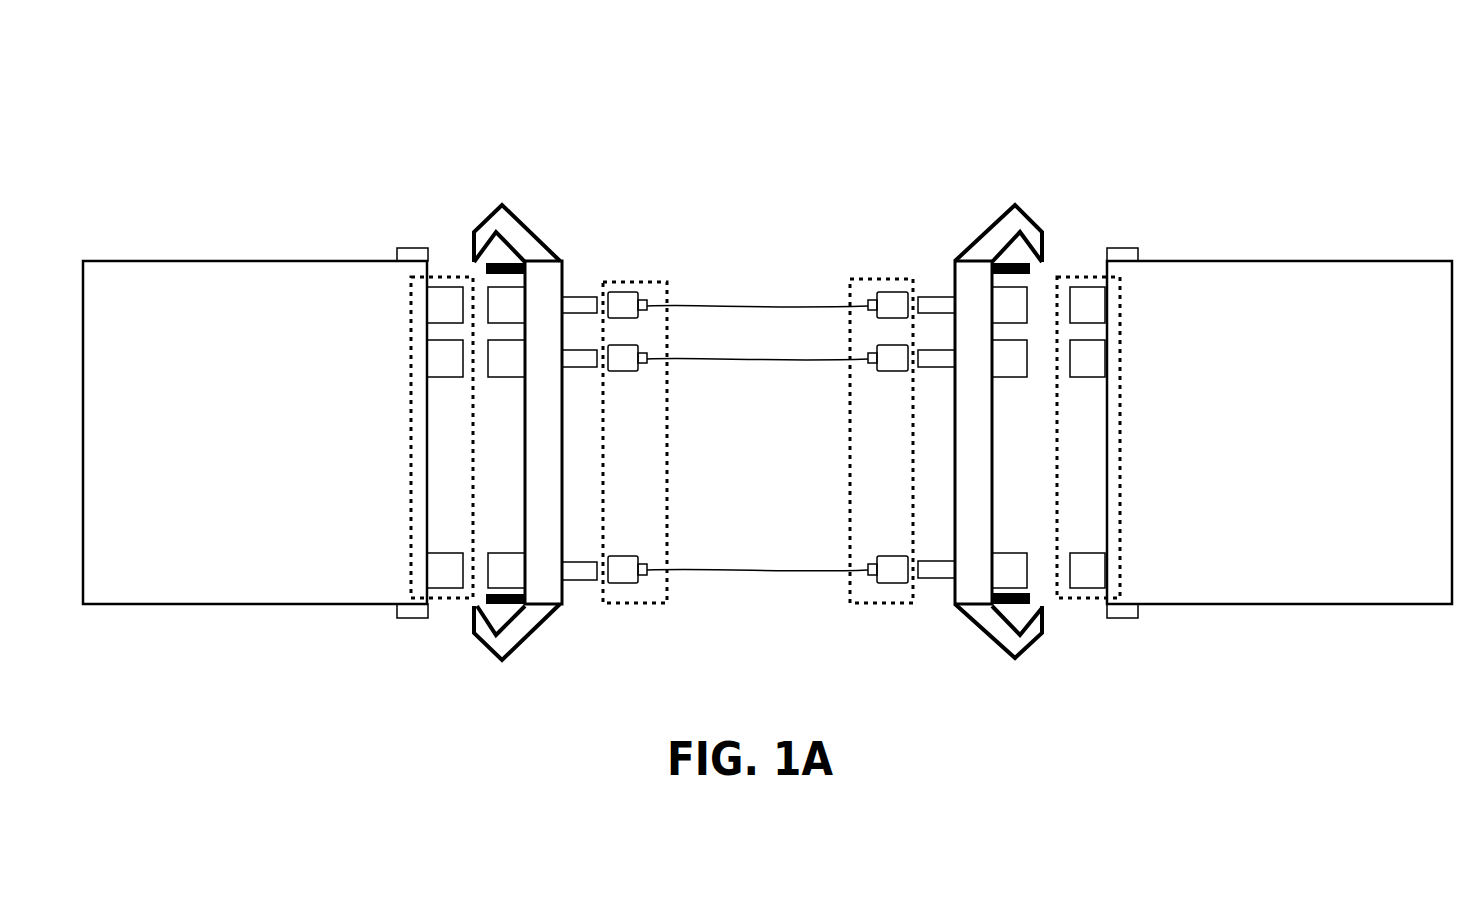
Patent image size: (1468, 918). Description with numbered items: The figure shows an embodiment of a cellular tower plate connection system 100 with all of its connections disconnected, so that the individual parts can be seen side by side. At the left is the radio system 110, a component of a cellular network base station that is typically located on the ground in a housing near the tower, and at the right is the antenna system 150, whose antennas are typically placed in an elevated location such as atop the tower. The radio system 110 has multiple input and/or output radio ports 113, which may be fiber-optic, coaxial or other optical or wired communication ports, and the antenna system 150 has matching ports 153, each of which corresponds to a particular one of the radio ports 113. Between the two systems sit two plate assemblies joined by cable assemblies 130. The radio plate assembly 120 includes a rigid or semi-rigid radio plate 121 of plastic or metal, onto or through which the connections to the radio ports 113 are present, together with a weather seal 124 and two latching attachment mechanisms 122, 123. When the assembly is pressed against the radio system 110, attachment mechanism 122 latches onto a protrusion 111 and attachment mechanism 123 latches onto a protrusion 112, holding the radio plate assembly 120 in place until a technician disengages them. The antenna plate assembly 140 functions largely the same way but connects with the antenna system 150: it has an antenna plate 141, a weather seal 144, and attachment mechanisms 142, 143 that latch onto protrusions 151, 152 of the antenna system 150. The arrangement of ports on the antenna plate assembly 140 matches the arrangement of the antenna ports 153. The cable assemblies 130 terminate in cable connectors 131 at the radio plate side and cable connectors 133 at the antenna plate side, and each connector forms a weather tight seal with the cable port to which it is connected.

The cellular tower plate connection system 100 is at (178, 79).
The radio system 110 is at (255, 432).
The protrusion 111 is at (400, 248).
The protrusion 112 is at (403, 618).
The radio ports 113 is at (445, 600).
The radio plate assembly 120 is at (449, 134).
The radio plate 121 is at (565, 590).
The attachment mechanism 122 is at (487, 217).
The attachment mechanism 123 is at (508, 660).
The weather seal 124 is at (512, 262).
The cable assemblies 130 is at (706, 279).
The cable connectors 131 is at (640, 605).
The cable connectors 133 is at (888, 605).
The antenna plate assembly 140 is at (937, 147).
The antenna plate 141 is at (955, 273).
The attachment mechanism 142 is at (992, 213).
The attachment mechanism 143 is at (1017, 660).
The weather seal 144 is at (1023, 260).
The antenna system 150 is at (1279, 432).
The protrusion 151 is at (1108, 248).
The protrusion 152 is at (1135, 620).
The antenna ports 153 is at (1080, 600).